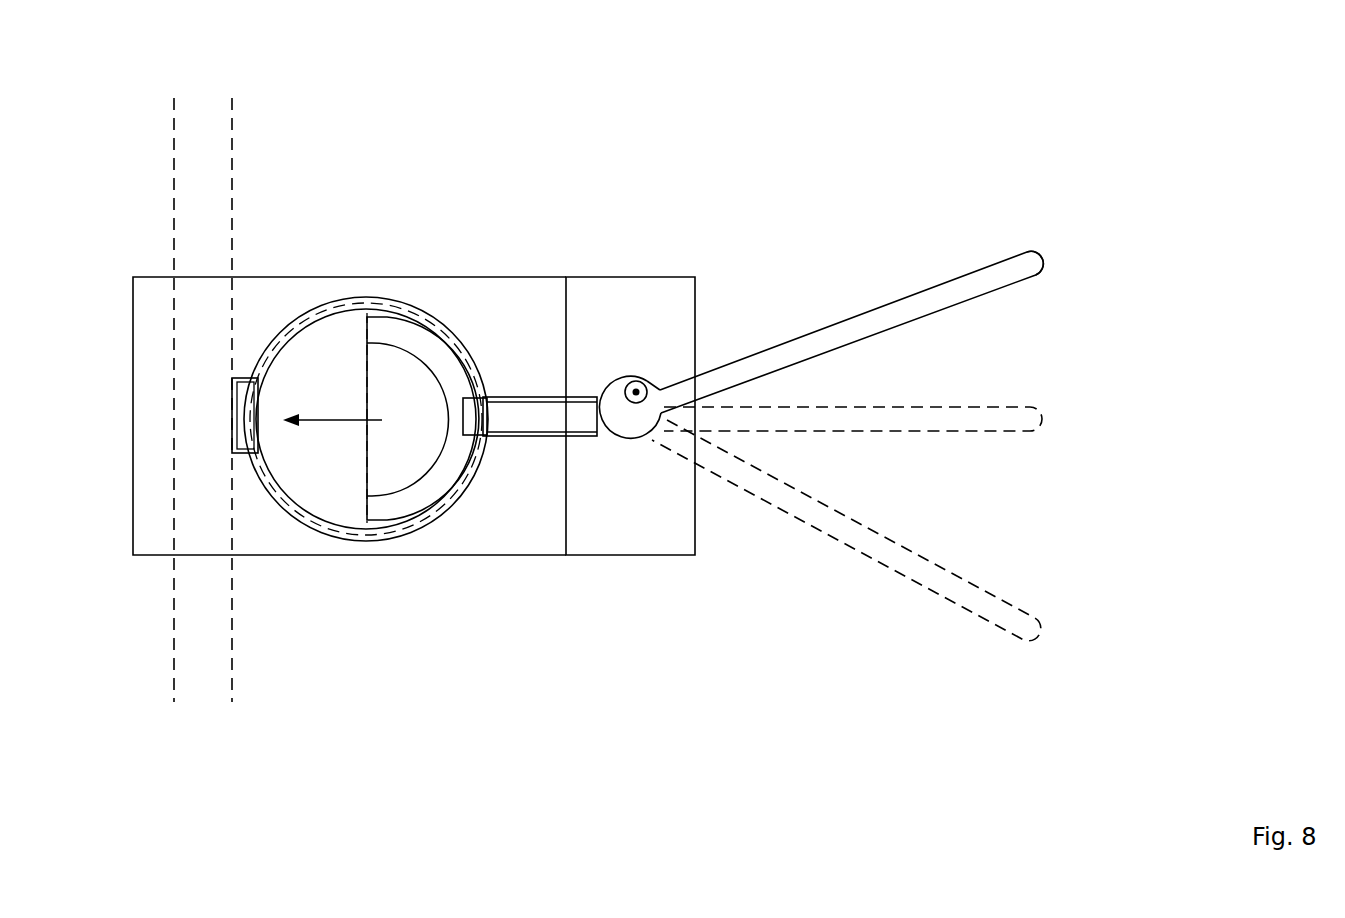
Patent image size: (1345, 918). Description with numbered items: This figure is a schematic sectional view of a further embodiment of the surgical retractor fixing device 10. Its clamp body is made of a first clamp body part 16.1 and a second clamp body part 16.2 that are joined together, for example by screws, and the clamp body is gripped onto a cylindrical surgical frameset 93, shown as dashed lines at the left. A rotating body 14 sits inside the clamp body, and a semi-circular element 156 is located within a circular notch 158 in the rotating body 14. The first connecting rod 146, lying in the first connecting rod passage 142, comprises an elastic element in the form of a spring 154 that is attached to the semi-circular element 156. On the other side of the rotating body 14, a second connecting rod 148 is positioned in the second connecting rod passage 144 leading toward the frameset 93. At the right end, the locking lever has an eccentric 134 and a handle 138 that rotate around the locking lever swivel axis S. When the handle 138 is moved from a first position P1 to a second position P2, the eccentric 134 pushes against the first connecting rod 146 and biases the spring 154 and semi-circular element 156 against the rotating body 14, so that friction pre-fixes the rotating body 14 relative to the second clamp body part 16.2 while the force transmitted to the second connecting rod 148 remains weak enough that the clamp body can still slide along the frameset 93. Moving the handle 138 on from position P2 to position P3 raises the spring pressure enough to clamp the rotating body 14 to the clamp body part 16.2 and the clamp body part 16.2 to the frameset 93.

The surgical retractor fixing device 10 is at (1037, 112).
The rotating body 14 is at (350, 320).
The first clamp body part 16.1 is at (627, 292).
The second clamp body part 16.2 is at (480, 292).
The surgical frameset 93 is at (210, 113).
The eccentric 134 is at (628, 440).
The handle 138 is at (928, 303).
The first connecting rod passage 142 is at (583, 396).
The second connecting rod passage 144 is at (248, 377).
The first connecting rod 146 is at (578, 427).
The second connecting rod 148 is at (243, 455).
The elastic element 154 is at (481, 440).
The semi-circular element 156 is at (413, 500).
The circular notch 158 is at (390, 523).
The locking lever swivel axis S is at (644, 385).
The first position P1 is at (1064, 266).
The second position P2 is at (882, 427).
The third position P3 is at (876, 532).